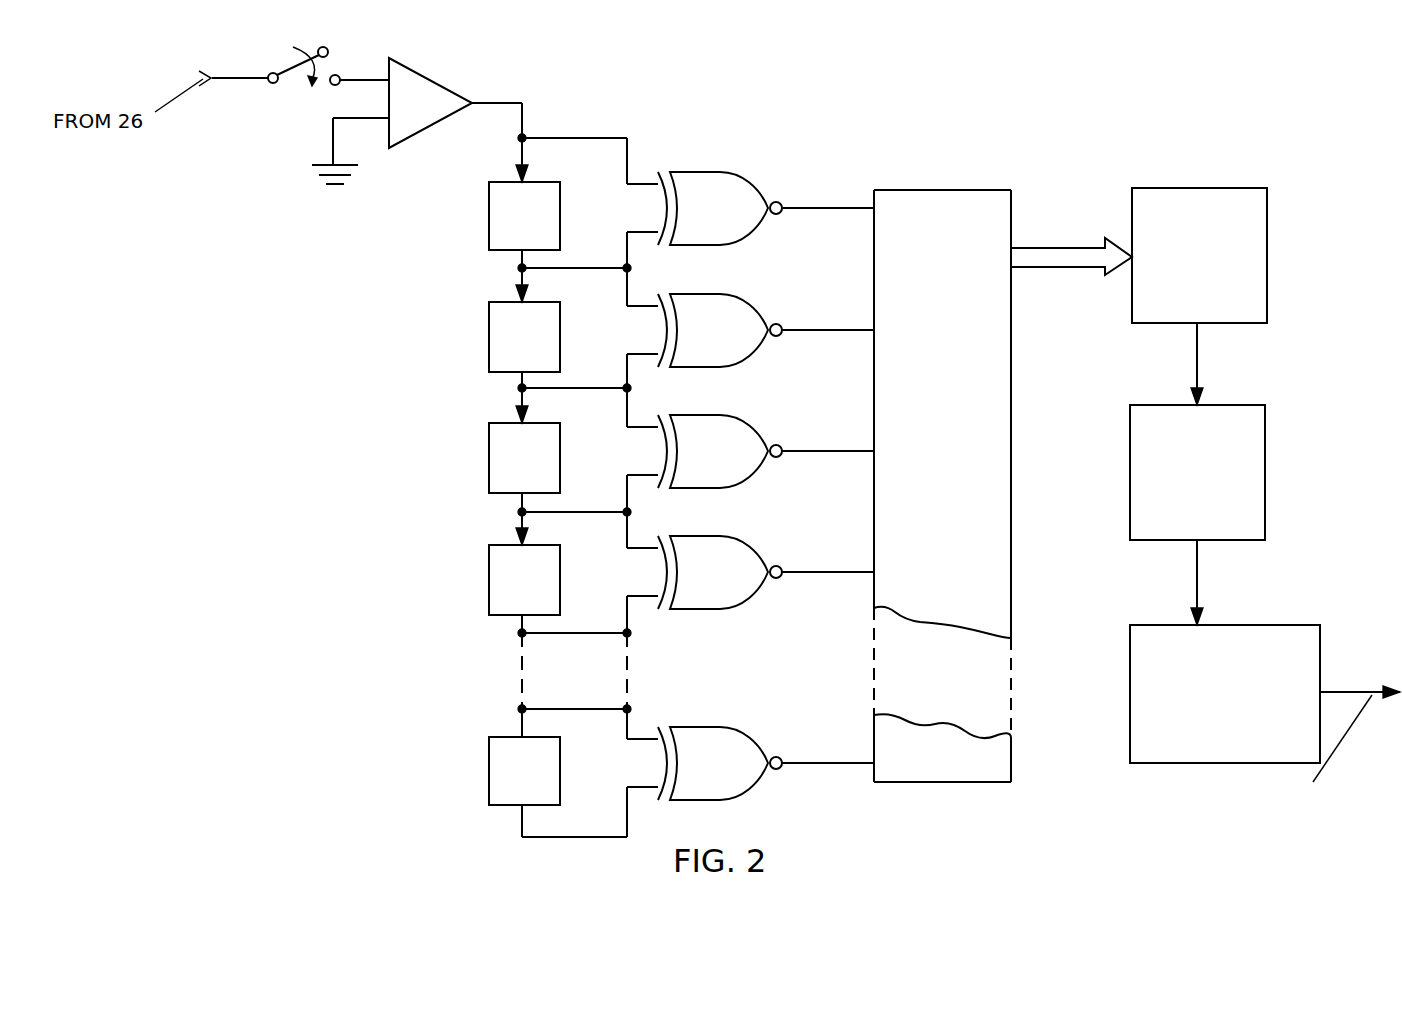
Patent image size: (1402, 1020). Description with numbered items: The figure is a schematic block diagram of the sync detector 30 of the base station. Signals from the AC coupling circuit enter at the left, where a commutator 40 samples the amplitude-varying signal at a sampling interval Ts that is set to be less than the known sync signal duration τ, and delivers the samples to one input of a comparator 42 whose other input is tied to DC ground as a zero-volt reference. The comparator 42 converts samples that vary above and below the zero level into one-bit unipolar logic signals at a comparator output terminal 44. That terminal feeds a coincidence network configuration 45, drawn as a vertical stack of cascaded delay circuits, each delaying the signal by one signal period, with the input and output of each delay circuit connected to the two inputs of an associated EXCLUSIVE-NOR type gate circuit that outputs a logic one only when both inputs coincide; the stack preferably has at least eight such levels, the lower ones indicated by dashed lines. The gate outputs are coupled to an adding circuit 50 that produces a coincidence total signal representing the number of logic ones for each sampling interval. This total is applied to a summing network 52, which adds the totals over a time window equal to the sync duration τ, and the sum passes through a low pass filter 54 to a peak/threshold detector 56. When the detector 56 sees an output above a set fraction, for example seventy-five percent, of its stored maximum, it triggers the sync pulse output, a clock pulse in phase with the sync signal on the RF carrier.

The sync detector 30 is at (885, 109).
The commutator 40 is at (283, 75).
The comparator 42 is at (433, 82).
The comparator output terminal 44 is at (508, 102).
The coincidence network configuration 45 is at (645, 109).
The adding circuit 50 is at (935, 190).
The summing network 52 is at (1268, 233).
The low pass filter 54 is at (1268, 465).
The peak/threshold detector 56 is at (1270, 622).